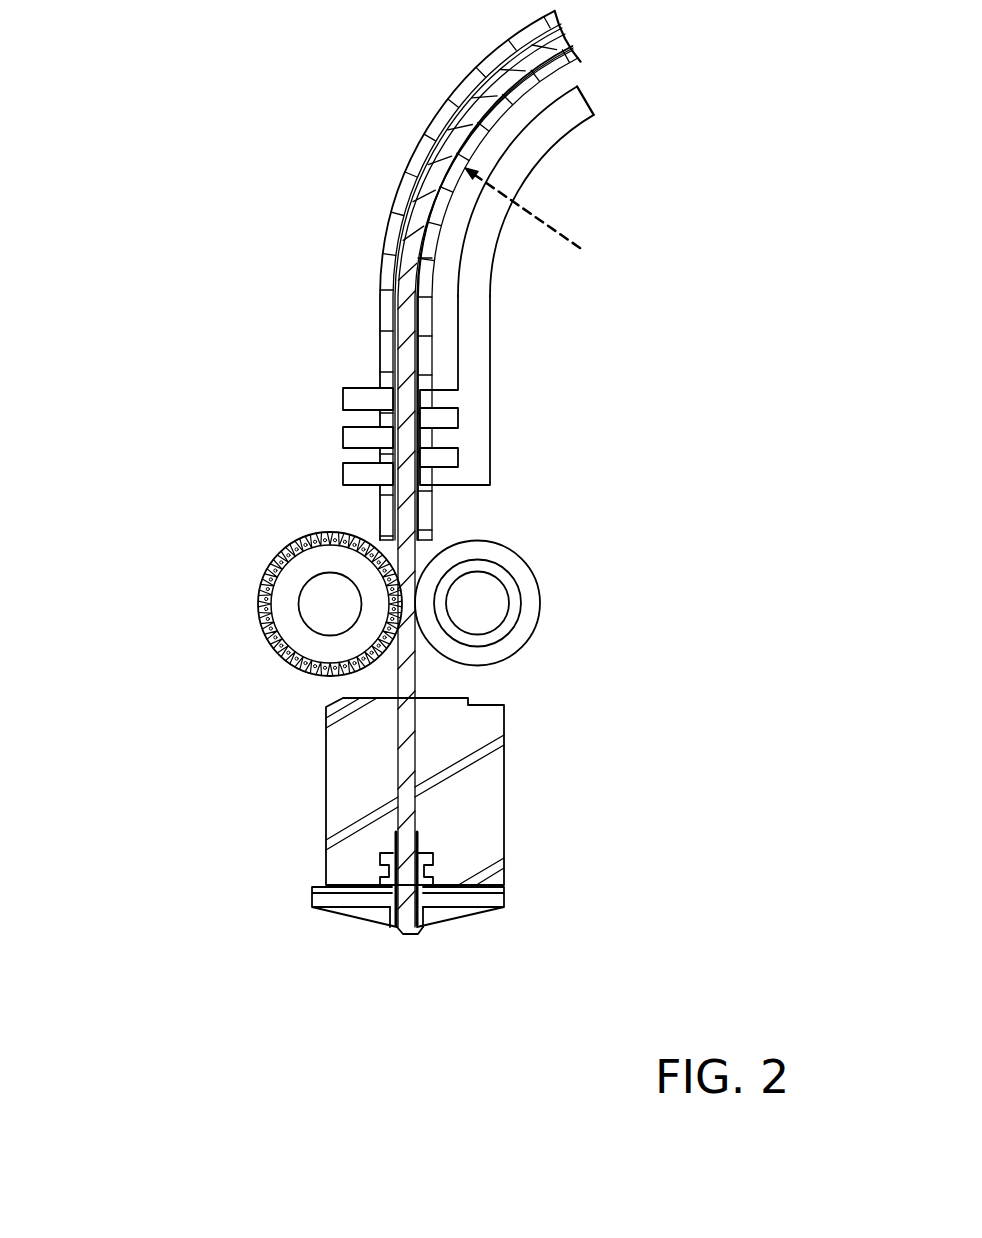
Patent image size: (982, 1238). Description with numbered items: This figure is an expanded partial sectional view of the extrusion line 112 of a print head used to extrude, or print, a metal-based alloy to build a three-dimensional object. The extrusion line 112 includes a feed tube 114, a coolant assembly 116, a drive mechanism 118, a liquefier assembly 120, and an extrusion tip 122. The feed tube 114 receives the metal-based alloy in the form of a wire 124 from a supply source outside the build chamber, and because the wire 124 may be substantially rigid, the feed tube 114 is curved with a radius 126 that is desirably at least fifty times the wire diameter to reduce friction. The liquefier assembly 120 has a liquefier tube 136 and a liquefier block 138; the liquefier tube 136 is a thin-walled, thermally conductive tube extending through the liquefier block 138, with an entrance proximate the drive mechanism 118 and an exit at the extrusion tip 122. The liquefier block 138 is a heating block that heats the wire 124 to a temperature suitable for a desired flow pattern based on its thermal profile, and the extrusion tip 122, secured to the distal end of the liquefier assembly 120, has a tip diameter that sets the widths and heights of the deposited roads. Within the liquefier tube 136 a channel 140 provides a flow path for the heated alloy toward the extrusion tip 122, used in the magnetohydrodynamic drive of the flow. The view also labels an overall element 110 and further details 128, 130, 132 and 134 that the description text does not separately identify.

The hot end / liquefier assembly 110 is at (476, 843).
The extrusion line 112 is at (144, 361).
The feed tube 114 is at (437, 106).
The coolant assembly 116 is at (500, 392).
The drive mechanism 118 is at (414, 604).
The liquefier assembly 120 is at (447, 762).
The extrusion tip 122 is at (414, 945).
The wire 124 is at (418, 212).
The radius 126 is at (545, 225).
The curved portion of guide tube 128 is at (492, 300).
The fins 130 is at (326, 392).
The drive gear 132 is at (260, 590).
The idler roller 134 is at (540, 628).
The liquefier tube 136 is at (393, 770).
The liquefier block 138 is at (340, 823).
The channel 140 is at (432, 843).